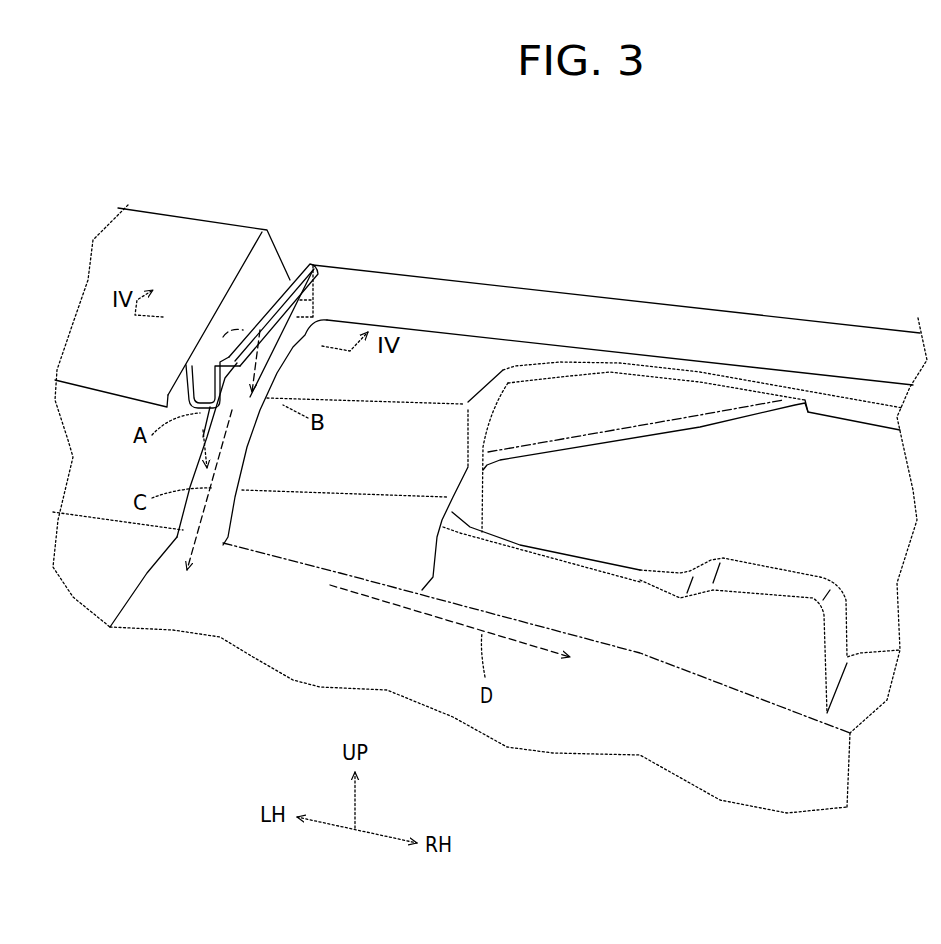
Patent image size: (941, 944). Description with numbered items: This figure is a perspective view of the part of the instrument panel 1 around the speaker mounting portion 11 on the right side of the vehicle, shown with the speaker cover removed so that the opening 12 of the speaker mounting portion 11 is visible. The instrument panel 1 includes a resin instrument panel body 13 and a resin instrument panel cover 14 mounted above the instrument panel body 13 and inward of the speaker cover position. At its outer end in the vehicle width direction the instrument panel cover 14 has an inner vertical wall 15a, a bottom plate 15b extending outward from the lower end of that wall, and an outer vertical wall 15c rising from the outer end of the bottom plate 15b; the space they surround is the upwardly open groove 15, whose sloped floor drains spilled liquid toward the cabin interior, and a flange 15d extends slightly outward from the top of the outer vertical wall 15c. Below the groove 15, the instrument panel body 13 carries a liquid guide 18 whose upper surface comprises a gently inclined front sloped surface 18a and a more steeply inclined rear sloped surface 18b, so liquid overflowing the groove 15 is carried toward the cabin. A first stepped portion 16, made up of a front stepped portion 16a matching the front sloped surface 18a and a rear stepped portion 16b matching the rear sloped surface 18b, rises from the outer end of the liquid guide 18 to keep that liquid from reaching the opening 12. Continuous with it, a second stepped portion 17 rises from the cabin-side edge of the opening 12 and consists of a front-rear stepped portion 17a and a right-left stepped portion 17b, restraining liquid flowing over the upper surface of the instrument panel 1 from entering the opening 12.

The instrument panel 1 is at (102, 126).
The speaker mounting portion 11 is at (833, 447).
The opening 12 is at (817, 505).
The instrument panel body 13 is at (647, 297).
The instrument panel cover 14 is at (167, 212).
The groove 15 is at (225, 280).
The inner vertical wall 15a is at (225, 303).
The bottom plate 15b is at (207, 377).
The outer vertical wall 15c is at (323, 263).
The flange 15d is at (296, 295).
The first stepped portion 16 is at (298, 382).
The front stepped portion 16a is at (277, 323).
The rear stepped portion 16b is at (233, 445).
The second stepped portion 17 is at (662, 591).
The front-rear stepped portion 17a is at (470, 508).
The right-left stepped portion 17b is at (650, 622).
The liquid guide 18 is at (351, 450).
The front sloped surface 18a is at (283, 370).
The rear sloped surface 18b is at (243, 490).